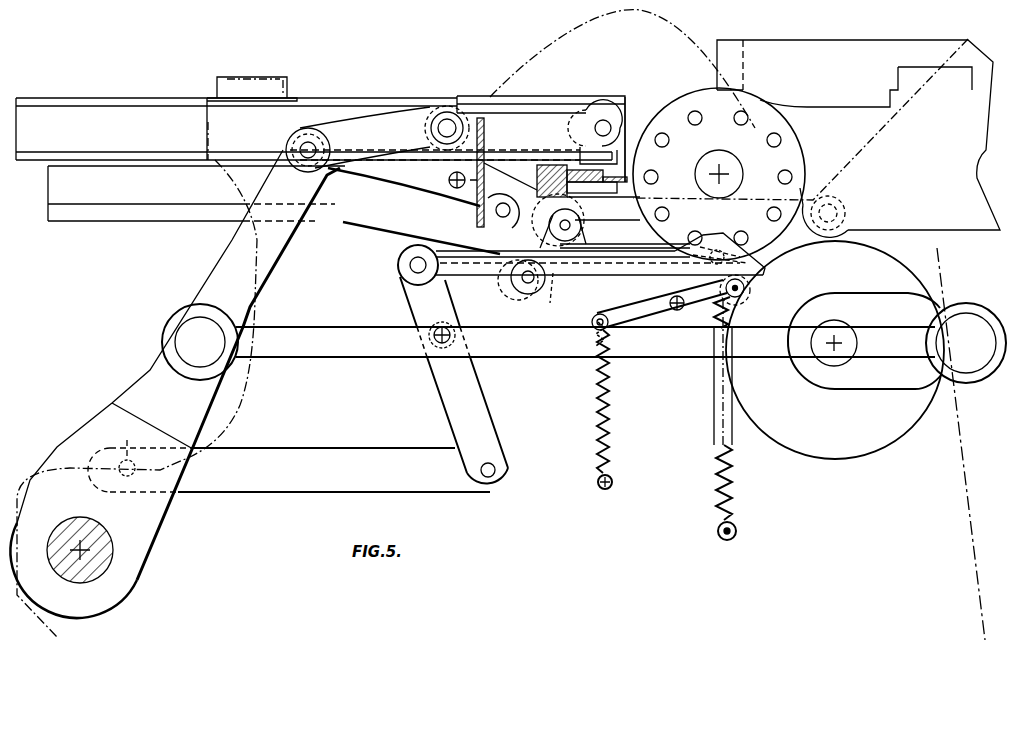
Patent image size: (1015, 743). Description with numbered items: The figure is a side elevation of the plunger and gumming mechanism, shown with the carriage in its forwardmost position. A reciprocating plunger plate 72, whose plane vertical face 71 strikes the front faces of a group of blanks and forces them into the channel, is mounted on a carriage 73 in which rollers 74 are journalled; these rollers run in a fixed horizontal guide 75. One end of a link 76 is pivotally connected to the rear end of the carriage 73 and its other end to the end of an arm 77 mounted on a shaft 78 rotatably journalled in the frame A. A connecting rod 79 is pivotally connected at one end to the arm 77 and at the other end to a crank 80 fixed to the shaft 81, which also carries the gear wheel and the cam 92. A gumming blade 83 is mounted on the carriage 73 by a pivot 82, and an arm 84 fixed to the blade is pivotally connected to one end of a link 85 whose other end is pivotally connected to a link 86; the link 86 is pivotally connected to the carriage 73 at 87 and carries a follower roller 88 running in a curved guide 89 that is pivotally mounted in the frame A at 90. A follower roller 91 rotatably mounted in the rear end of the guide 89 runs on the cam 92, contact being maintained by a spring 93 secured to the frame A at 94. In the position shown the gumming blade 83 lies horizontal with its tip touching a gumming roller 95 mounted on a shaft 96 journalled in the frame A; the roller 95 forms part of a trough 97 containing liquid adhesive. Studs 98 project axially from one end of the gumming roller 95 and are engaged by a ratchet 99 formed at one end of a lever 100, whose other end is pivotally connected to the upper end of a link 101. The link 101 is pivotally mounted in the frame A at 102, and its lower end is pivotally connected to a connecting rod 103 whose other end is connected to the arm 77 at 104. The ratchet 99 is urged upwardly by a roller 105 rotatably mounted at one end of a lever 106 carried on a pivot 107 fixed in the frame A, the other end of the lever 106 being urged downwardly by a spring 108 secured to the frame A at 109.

The plane vertical face 71 is at (470, 206).
The plunger plate 72 is at (481, 118).
The carriage 73 is at (530, 118).
The rollers 74 is at (437, 112).
The fixed horizontal guide 75 is at (105, 118).
The link 76 is at (375, 138).
The arm 77 is at (225, 250).
The shaft 78 is at (108, 555).
The connecting rod 79 is at (318, 353).
The crank 80 is at (870, 305).
The shaft 81 is at (840, 367).
The pivot 82 is at (565, 165).
The gumming blade 83 is at (626, 180).
The arm 84 is at (578, 220).
The link 85 is at (581, 232).
The link 86 is at (504, 275).
The pivot 87 is at (496, 211).
The follower roller 88 is at (525, 291).
The curved guide 89 is at (342, 200).
The pivot 90 is at (449, 180).
The follower roller 91 is at (845, 206).
The cam 92 is at (872, 258).
The spring 93 is at (716, 464).
The spring anchorage 94 is at (718, 527).
The gumming roller 95 is at (760, 118).
The shaft 96 is at (719, 162).
The trough 97 is at (730, 46).
The studs 98 is at (738, 110).
The ratchet 99 is at (690, 270).
The lever 100 is at (607, 272).
The link 101 is at (497, 410).
The pivot 102 is at (432, 342).
The connecting rod 103 is at (322, 457).
The pivot 104 is at (140, 454).
The roller 105 is at (752, 288).
The lever 106 is at (650, 334).
The pivot 107 is at (678, 312).
The spring 108 is at (612, 445).
The spring anchorage 109 is at (598, 482).
The frame A is at (975, 530).